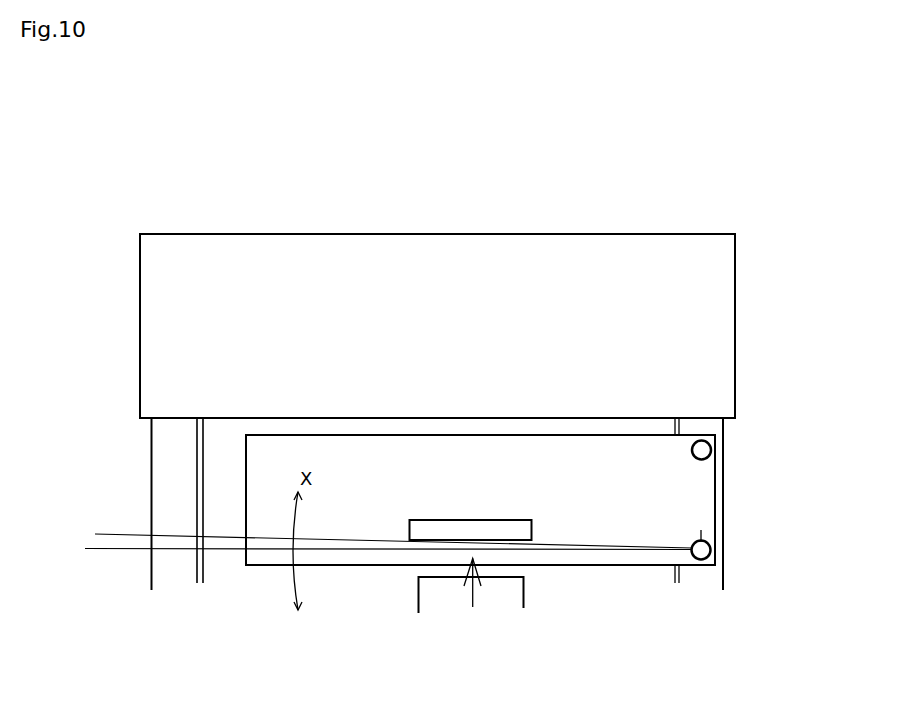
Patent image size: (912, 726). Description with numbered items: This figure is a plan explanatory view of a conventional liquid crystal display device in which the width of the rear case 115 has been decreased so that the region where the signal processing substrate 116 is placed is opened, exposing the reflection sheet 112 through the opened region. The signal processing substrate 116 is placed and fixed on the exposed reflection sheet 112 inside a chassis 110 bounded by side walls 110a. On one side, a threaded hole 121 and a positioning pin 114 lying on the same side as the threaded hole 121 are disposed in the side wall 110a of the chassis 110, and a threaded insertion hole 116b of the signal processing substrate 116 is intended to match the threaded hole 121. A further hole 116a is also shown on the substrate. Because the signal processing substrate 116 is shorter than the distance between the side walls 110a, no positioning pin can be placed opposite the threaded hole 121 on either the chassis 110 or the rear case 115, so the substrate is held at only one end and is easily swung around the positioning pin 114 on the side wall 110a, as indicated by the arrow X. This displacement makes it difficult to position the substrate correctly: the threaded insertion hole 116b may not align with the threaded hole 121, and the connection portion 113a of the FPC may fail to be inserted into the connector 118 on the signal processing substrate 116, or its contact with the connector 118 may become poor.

The chassis 110 is at (138, 489).
The side wall 110a is at (188, 579).
The reflection sheet 112 is at (214, 429).
The connection portion 113a is at (517, 600).
The positioning pin 114 is at (701, 579).
The rear case 115 is at (383, 260).
The signal processing substrate 116 is at (604, 439).
The lower pivot 116a is at (724, 542).
The threaded insertion hole 116b is at (752, 413).
The connector 118 is at (469, 512).
The threaded hole 121 is at (724, 460).